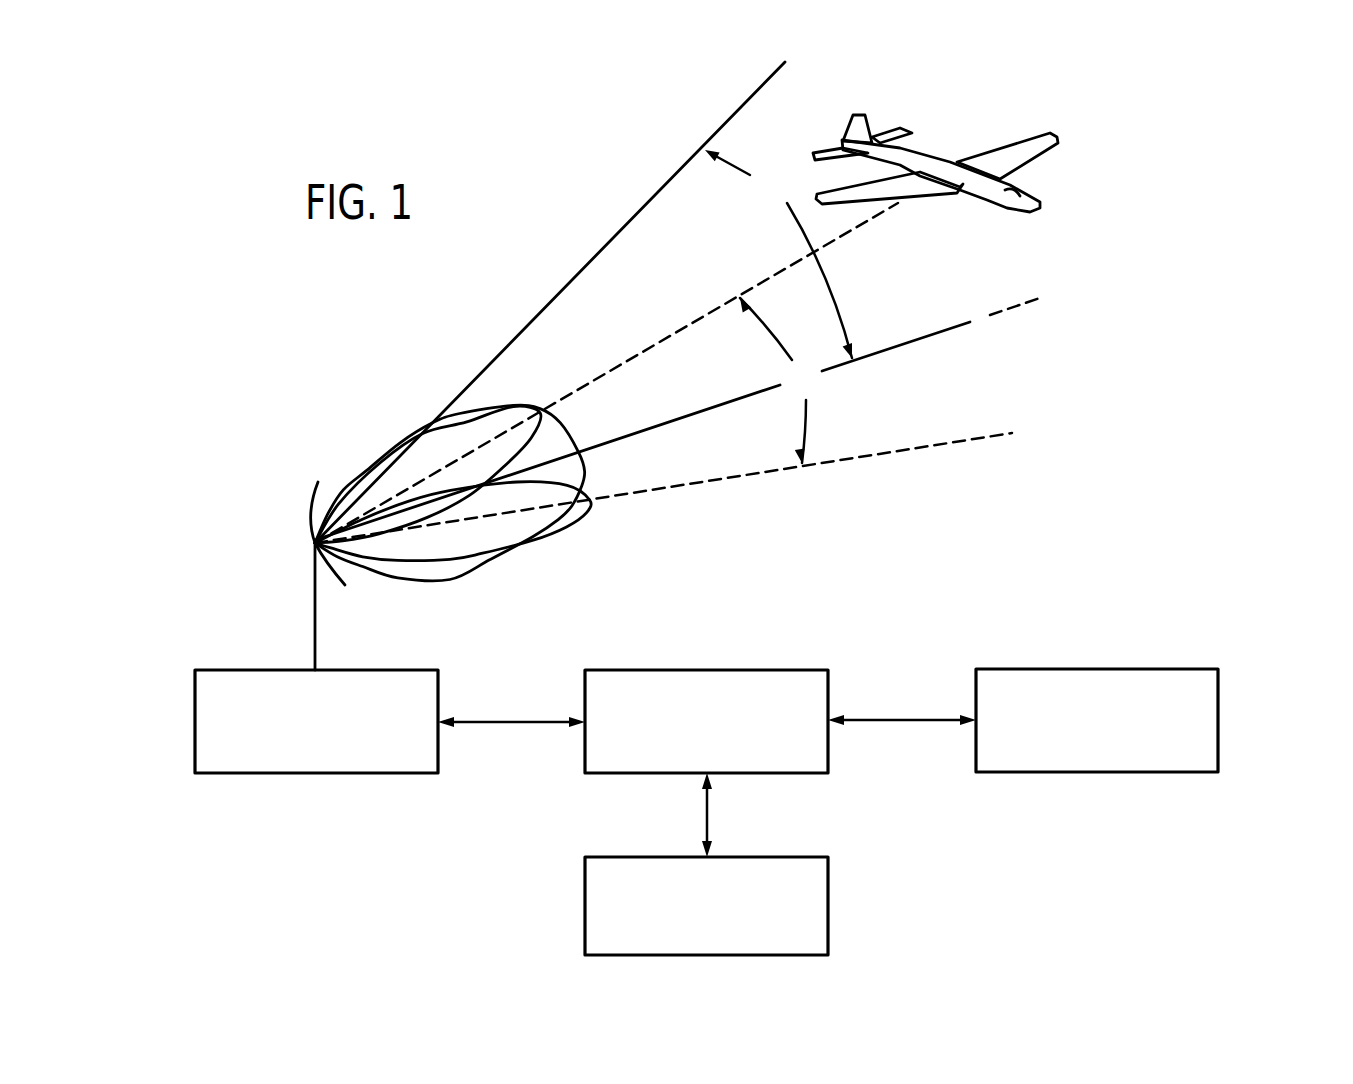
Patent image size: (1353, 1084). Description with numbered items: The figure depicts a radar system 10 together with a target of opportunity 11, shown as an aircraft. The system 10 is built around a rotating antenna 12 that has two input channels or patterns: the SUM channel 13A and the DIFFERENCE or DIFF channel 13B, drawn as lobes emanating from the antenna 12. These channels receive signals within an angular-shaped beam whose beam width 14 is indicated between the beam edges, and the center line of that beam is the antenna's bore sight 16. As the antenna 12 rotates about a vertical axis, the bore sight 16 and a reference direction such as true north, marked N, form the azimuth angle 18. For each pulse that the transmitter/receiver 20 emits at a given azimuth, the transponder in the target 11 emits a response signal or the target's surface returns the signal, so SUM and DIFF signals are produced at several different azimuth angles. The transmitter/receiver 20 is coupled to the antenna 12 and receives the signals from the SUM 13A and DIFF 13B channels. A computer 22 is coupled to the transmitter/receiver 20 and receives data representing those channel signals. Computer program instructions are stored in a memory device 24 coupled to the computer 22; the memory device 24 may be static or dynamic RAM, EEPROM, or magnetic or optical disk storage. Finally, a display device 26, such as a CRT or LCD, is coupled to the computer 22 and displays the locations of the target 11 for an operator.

The radar system 10 is at (523, 262).
The target of opportunity 11 is at (945, 160).
The rotating antenna 12 is at (290, 487).
The SUM channel 13A is at (584, 472).
The DIFF channel 13B is at (542, 412).
The beam width 14 is at (775, 380).
The bore sight 16 is at (875, 355).
The azimuth angle 18 is at (778, 254).
The transmitter/receiver 20 is at (438, 697).
The computer 22 is at (830, 695).
The memory device 24 is at (830, 912).
The display device 26 is at (1222, 728).